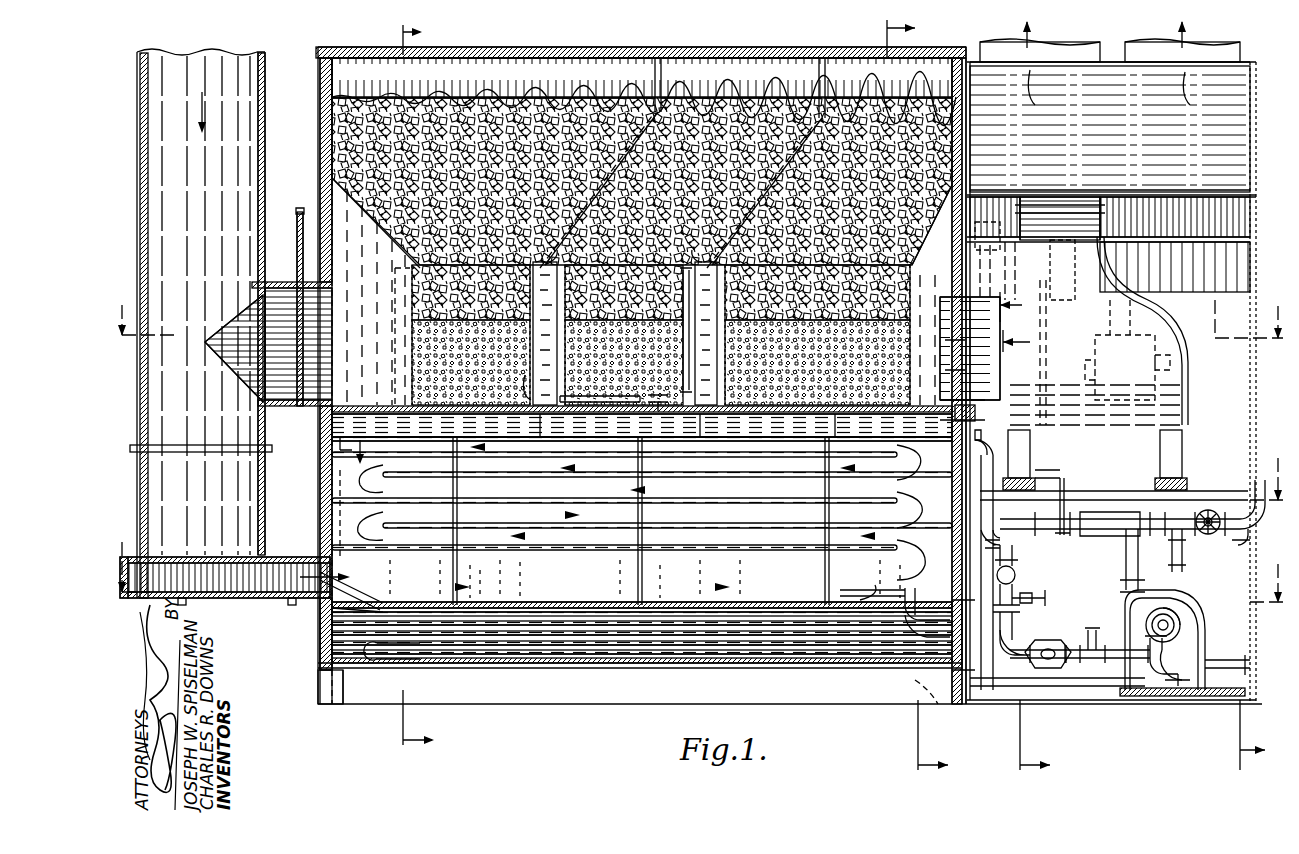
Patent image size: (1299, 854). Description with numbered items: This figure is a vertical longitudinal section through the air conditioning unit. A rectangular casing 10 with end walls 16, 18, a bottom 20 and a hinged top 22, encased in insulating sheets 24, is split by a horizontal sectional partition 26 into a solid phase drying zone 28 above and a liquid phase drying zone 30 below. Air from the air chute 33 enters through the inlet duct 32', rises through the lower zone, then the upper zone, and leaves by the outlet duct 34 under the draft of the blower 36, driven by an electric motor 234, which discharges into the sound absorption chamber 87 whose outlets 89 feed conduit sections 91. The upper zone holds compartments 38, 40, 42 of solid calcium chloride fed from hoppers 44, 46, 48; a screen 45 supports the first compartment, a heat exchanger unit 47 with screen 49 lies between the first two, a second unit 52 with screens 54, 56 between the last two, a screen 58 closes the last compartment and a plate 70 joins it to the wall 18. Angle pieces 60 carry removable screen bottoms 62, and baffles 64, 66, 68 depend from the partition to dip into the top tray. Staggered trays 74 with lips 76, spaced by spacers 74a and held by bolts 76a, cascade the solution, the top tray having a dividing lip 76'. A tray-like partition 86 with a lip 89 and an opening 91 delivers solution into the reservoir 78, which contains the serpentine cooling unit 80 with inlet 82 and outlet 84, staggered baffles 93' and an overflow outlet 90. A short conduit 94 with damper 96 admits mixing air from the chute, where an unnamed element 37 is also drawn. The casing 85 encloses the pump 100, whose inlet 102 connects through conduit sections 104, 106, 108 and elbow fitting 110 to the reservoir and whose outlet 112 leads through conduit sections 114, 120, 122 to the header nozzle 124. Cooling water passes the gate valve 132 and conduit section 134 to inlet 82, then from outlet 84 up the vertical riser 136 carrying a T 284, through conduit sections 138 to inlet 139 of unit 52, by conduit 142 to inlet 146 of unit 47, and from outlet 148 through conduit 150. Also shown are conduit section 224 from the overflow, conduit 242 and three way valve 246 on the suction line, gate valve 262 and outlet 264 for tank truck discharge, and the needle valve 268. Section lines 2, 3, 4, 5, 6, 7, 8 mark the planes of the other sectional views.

The casing 10 is at (314, 76).
The end wall 16 is at (326, 168).
The end wall 18 is at (960, 138).
The bottom 20 is at (560, 668).
The cover or top 22 is at (656, 62).
The sheets of heat insulating or decorative material 24 is at (322, 138).
The partition 26 is at (412, 412).
The solid phase drying zone 28 is at (644, 168).
The liquid phase drying zone 30 is at (455, 580).
The duct wall extension 32' is at (303, 634).
The air chute 33 is at (193, 80).
The outlet duct 34 is at (960, 333).
The blower or fan 36 is at (1120, 406).
The damper 37 is at (300, 238).
The first compartment 38 is at (471, 335).
The second compartment 40 is at (624, 335).
The last compartment 42 is at (817, 335).
The hopper 44 is at (496, 82).
The screen 45 is at (412, 365).
The hopper 46 is at (722, 80).
The heat exchanger unit 47 is at (541, 333).
The hopper 48 is at (838, 70).
The screen 49 is at (512, 313).
The second heat exchanger unit 52 is at (705, 333).
The screen 54 is at (680, 335).
The screen 56 is at (790, 300).
The screen 58 is at (864, 339).
The angle pieces 60 is at (642, 422).
The removable screen bottoms 62 is at (641, 381).
The baffle 64 is at (396, 422).
The baffle 66 is at (620, 428).
The baffle 68 is at (790, 428).
The solid plate 70 is at (930, 420).
The trays 74 is at (460, 485).
The spacers 74a is at (448, 578).
The lips 76 is at (647, 512).
The lip 76' is at (318, 515).
The bolts 76a is at (445, 660).
The reservoir 78 is at (338, 700).
The serpentine coil cooling unit 80 is at (612, 652).
The water inlet 82 is at (905, 650).
The water outlet 84 is at (1002, 648).
The casing 85 is at (1253, 272).
The partition 86 is at (852, 600).
The outlet sound absorption chamber 87 is at (1110, 127).
The outlets 89 is at (1045, 70).
The overflow outlet 90 is at (905, 700).
The conduit sections 91 is at (1075, 60).
The staggered baffles 93' is at (321, 637).
The short conduit section 94 is at (272, 318).
The damper 96 is at (306, 348).
The pump 100 is at (1180, 615).
The pump inlet 102 is at (1170, 690).
The conduit section 104 is at (1130, 665).
The conduit section 106 is at (1090, 690).
The conduit section 108 is at (986, 686).
The elbow fitting 110 is at (945, 690).
The pump outlet 112 is at (1126, 592).
The conduit section 114 is at (1115, 530).
The conduit section 120 is at (1112, 530).
The conduit section 122 is at (1050, 516).
The header nozzle 124 is at (945, 405).
The gate valve 132 is at (1016, 575).
The conduit section 134 is at (1020, 627).
The vertical riser 136 is at (1022, 552).
The conduit sections 138 is at (1018, 390).
The inlet 139 is at (774, 354).
The conduit 142 is at (600, 488).
The inlet 146 is at (528, 372).
The outlet 148 is at (418, 223).
The conduit 150 is at (1082, 480).
The conduit section 224 is at (1105, 650).
The electric motor 234 is at (1160, 385).
The conduit 242 is at (1220, 660).
The three way valve 246 is at (1050, 668).
The gate valve 262 is at (1215, 540).
The outlet 264 is at (1250, 495).
The needle valve 268 is at (1047, 598).
The T 284 is at (1005, 545).
The section line 2 is at (700, 311).
The section line 3 is at (700, 561).
The section line 4 is at (428, 387).
The section line 5 is at (932, 397).
The section line 6 is at (814, 464).
The section line 7 is at (1146, 550).
The section line 8 is at (1036, 535).